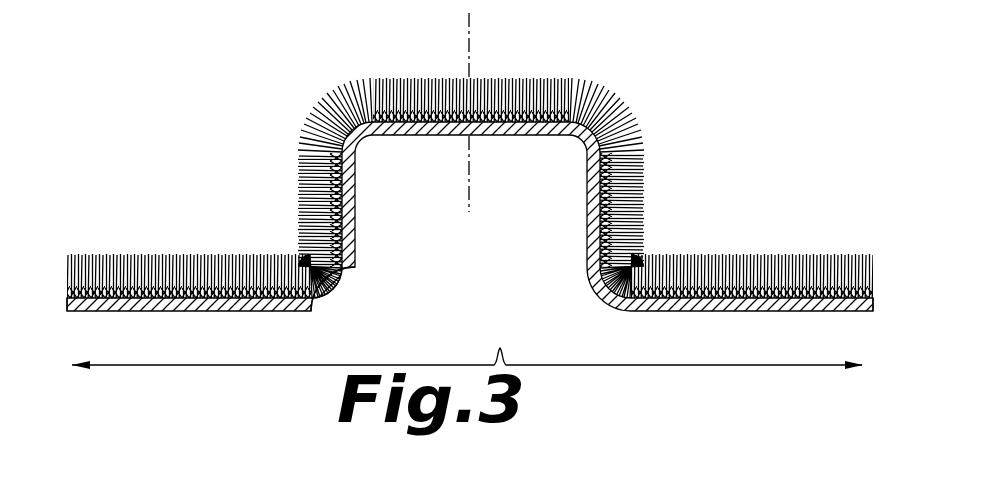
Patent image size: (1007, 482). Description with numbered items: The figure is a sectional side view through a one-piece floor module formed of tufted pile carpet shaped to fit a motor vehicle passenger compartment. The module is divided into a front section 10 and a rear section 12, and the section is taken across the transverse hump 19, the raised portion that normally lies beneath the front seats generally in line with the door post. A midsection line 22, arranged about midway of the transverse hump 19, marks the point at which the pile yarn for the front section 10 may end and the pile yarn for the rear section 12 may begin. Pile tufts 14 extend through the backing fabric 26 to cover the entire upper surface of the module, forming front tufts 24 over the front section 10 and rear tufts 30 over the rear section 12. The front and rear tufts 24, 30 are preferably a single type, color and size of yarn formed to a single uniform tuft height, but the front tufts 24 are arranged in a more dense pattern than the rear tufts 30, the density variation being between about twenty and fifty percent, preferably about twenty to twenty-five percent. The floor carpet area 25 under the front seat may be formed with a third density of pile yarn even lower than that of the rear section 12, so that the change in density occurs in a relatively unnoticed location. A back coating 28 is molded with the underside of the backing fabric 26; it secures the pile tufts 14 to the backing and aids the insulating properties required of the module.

The front section 10 is at (150, 216).
The rear section 12 is at (652, 220).
The pile tufts 14 is at (432, 74).
The transverse hump 19 is at (513, 75).
The midsection line 22 is at (486, 137).
The front tufts 24 is at (150, 256).
The floor carpet area 25 is at (467, 338).
The backing fabric 26 is at (67, 299).
The back coating 28 is at (311, 304).
The rear tufts 30 is at (788, 256).